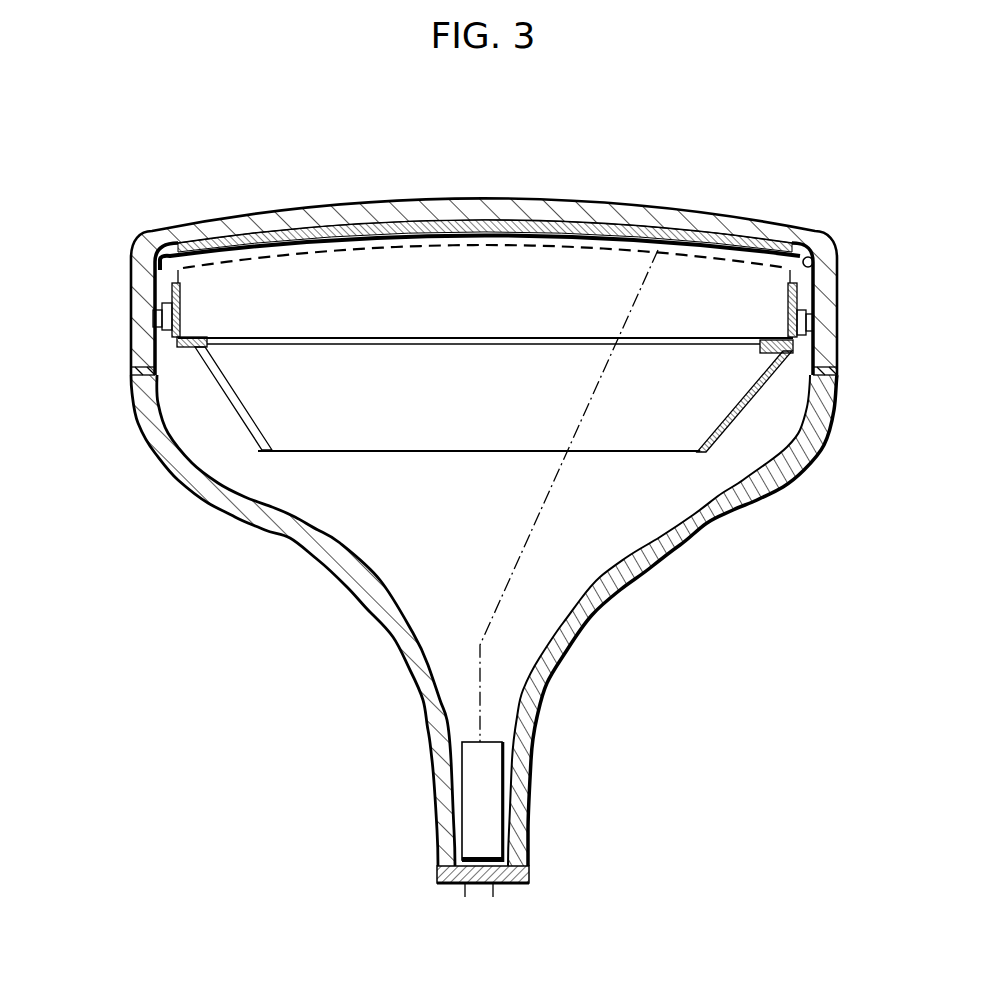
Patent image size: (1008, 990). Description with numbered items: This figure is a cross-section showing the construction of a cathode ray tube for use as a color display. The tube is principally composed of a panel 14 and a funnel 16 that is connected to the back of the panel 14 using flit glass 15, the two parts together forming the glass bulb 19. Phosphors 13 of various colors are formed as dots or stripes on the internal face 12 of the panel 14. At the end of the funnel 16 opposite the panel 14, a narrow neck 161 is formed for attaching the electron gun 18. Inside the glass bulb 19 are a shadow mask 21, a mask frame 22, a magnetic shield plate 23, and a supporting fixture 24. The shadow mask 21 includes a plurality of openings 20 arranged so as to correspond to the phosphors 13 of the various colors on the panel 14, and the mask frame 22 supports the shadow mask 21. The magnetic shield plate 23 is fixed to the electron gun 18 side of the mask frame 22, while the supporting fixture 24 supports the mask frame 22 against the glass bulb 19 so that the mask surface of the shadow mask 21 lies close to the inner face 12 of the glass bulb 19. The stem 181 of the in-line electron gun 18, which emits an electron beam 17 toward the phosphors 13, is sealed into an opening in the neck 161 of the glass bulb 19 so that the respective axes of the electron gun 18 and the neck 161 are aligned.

The internal face of the panel 12 is at (812, 258).
The phosphors 13 is at (347, 237).
The panel 14 is at (296, 200).
The flit glass 15 is at (140, 378).
The funnel 16 is at (252, 510).
The electron beam 17 is at (547, 507).
The electron gun 18 is at (472, 770).
The glass bulb 19 is at (676, 562).
The openings 20 is at (398, 243).
The shadow mask 21 is at (597, 237).
The mask frame 22 is at (794, 352).
The magnetic shield plate 23 is at (745, 525).
The supporting fixture 24 is at (806, 326).
The neck 161 is at (520, 755).
The stem 181 is at (515, 884).